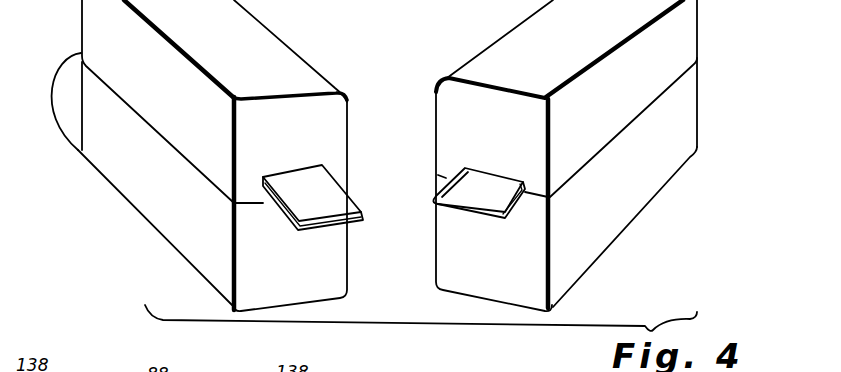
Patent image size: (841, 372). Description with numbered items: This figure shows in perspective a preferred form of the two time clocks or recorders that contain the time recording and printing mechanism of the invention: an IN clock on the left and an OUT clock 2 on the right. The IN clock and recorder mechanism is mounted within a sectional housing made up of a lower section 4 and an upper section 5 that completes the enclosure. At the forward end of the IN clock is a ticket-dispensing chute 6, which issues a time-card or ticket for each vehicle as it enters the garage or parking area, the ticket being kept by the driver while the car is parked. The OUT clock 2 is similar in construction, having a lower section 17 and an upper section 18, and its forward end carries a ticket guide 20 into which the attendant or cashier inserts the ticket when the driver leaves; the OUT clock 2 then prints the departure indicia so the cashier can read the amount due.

The OUT clock 2 is at (409, 165).
The lower section 4 is at (129, 184).
The upper section 5 is at (214, 101).
The ticket-dispensing chute 6 is at (333, 182).
The lower section 17 is at (648, 195).
The upper section 18 is at (683, 22).
The ticket guide 20 is at (484, 178).